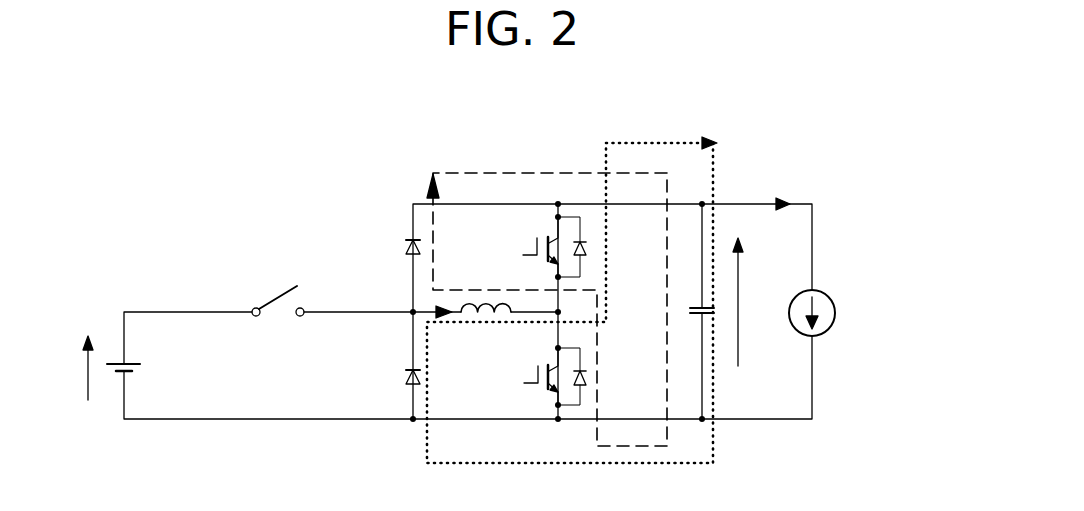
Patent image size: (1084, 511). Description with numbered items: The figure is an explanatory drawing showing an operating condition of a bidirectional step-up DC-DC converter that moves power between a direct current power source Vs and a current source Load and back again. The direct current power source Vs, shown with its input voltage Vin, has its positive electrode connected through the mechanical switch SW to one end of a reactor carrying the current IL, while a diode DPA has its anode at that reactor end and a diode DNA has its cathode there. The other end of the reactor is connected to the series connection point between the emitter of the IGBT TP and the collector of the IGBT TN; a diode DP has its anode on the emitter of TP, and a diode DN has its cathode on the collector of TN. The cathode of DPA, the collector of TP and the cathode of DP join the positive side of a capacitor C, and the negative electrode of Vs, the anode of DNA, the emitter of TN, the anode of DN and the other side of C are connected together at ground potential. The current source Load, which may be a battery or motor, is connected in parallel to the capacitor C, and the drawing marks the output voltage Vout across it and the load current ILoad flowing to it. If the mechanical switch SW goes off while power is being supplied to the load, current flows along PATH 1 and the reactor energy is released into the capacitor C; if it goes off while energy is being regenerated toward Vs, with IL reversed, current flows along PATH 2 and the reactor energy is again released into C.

The direct current power source Vs is at (141, 366).
The input voltage Vin is at (66, 368).
The mechanical switch SW is at (278, 323).
The diode DPA is at (379, 233).
The diode DNA is at (379, 391).
The current IL is at (477, 332).
The IGBT TP is at (529, 246).
The diode DP is at (586, 244).
The IGBT TN is at (529, 372).
The diode DN is at (586, 375).
The capacitor C is at (694, 298).
The load current ILoad is at (786, 185).
The output voltage Vout is at (764, 319).
The current source Load is at (844, 313).
The path 1 PATH 1 is at (572, 283).
The path 2 PATH 2 is at (547, 292).